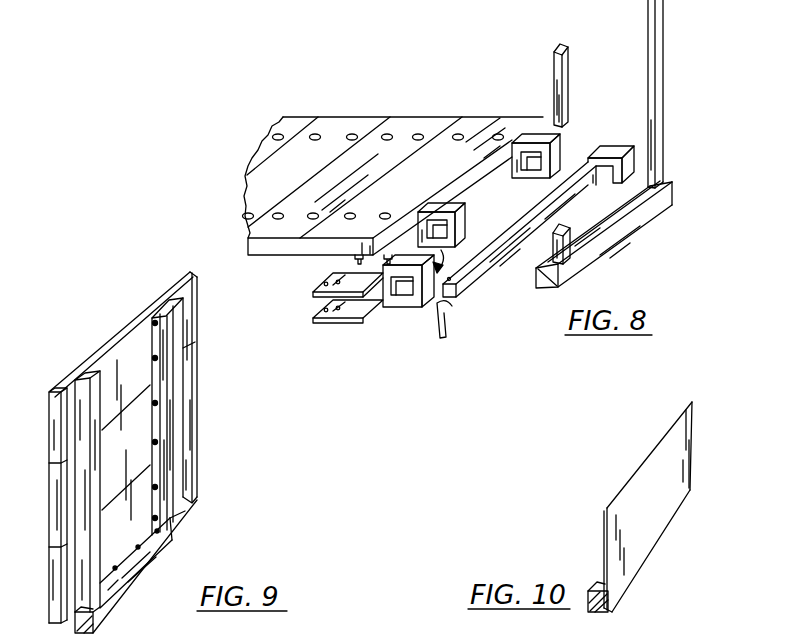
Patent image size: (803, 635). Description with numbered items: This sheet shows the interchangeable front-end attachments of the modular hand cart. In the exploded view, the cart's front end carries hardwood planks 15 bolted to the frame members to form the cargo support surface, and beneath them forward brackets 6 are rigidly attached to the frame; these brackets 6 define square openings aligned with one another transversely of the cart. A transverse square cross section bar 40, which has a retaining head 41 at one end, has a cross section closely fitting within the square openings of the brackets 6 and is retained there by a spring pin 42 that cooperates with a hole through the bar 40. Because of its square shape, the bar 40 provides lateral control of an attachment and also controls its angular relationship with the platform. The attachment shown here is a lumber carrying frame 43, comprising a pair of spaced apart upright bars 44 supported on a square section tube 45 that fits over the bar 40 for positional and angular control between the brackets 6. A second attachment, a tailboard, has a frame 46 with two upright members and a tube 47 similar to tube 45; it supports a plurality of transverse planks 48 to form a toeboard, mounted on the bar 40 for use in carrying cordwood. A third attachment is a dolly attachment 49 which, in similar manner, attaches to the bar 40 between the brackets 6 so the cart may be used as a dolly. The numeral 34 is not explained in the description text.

In FIG. 8, the brackets 6 is at (559, 156).
In FIG. 8, the hardwood planks 15 is at (410, 126).
In FIG. 8, the frame member 34 is at (223, 9).
In FIG. 8, the transverse square cross section bar 40 is at (497, 257).
In FIG. 8, the retaining head 41 is at (616, 146).
In FIG. 8, the spring pin 42 is at (452, 307).
In FIG. 8, the lumber carrying frame 43 is at (597, 267).
In FIG. 8, the upright bars 44 is at (648, 95).
In FIG. 8, the square section tube 45 is at (645, 210).
In FIG. 9, the frame 46 is at (178, 425).
In FIG. 9, the tube 47 is at (147, 570).
In FIG. 9, the transverse planks 48 is at (130, 364).
In FIG. 10, the dolly attachment 49 is at (645, 540).